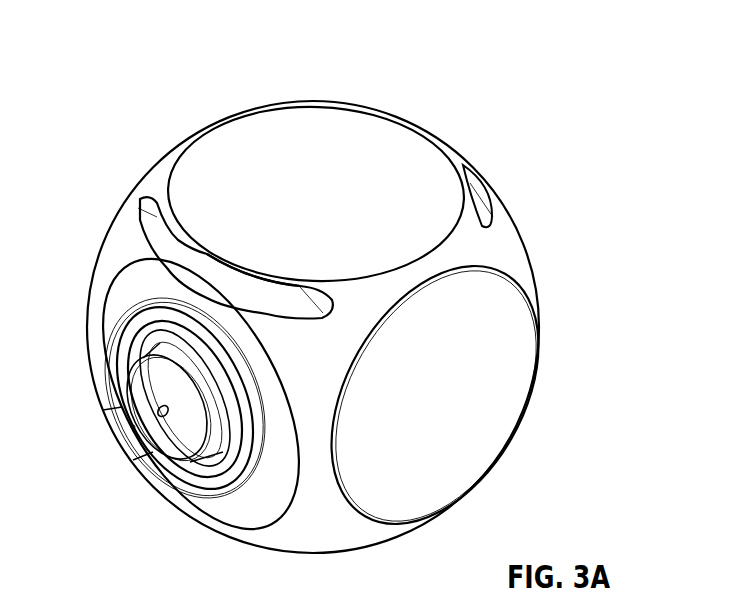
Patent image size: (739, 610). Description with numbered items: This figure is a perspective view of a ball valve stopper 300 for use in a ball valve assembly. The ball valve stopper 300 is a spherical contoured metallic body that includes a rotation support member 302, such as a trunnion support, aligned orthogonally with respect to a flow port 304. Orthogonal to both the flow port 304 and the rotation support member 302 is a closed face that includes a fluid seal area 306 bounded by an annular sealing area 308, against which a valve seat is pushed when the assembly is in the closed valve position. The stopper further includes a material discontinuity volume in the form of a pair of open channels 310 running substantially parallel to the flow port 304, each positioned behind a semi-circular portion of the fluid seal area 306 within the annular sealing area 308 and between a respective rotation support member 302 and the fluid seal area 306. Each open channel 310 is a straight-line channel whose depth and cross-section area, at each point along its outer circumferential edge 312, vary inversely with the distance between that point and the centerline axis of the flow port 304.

The ball valve stopper 300 is at (563, 82).
The rotation support member 302 is at (167, 437).
The flow port 304 is at (482, 430).
The fluid seal area 306 is at (318, 167).
The annular sealing area 308 is at (262, 268).
The open channel 310 is at (480, 193).
The outer circumferential edge 312 is at (205, 262).